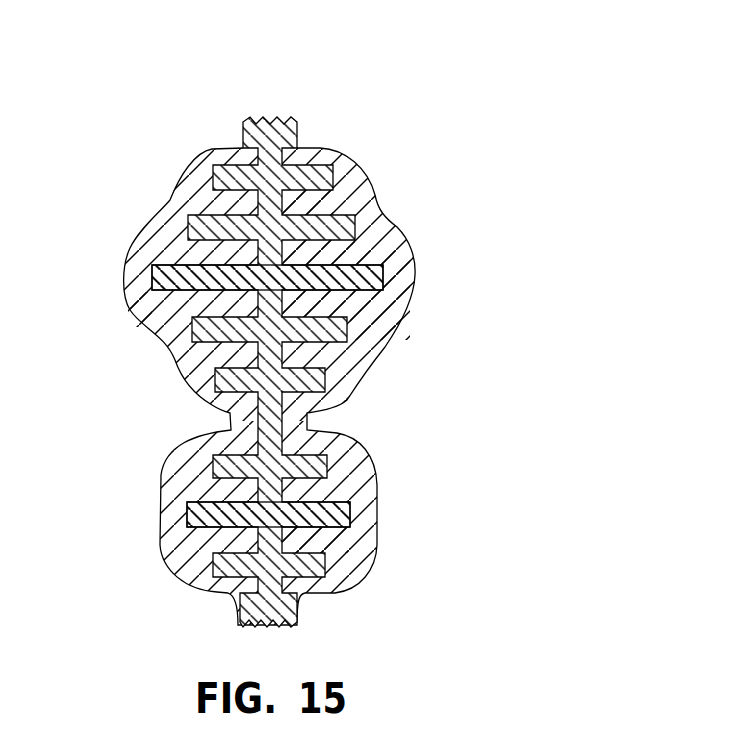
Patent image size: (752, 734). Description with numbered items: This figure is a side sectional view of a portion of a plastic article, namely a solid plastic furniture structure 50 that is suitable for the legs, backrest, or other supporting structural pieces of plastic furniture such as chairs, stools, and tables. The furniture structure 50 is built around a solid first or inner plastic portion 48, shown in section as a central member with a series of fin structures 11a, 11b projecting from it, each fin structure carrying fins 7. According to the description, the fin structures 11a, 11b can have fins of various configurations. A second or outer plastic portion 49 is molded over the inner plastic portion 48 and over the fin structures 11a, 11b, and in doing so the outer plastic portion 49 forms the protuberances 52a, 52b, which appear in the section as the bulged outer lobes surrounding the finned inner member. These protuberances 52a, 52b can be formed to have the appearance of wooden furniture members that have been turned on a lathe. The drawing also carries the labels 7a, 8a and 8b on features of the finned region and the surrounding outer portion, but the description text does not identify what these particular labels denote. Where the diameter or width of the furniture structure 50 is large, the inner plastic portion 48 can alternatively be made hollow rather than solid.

The furniture structure 50 is at (317, 313).
The inner plastic portion 48 is at (338, 342).
The fins 7 is at (358, 228).
The rib 7a is at (333, 212).
The protuberance 52a is at (393, 240).
The protuberance 52b is at (360, 453).
The fin structure 11a is at (383, 276).
The fin structure 11b is at (333, 533).
The groove 8a is at (397, 307).
The groove 8b is at (344, 306).
The outer plastic portion 49 is at (132, 316).